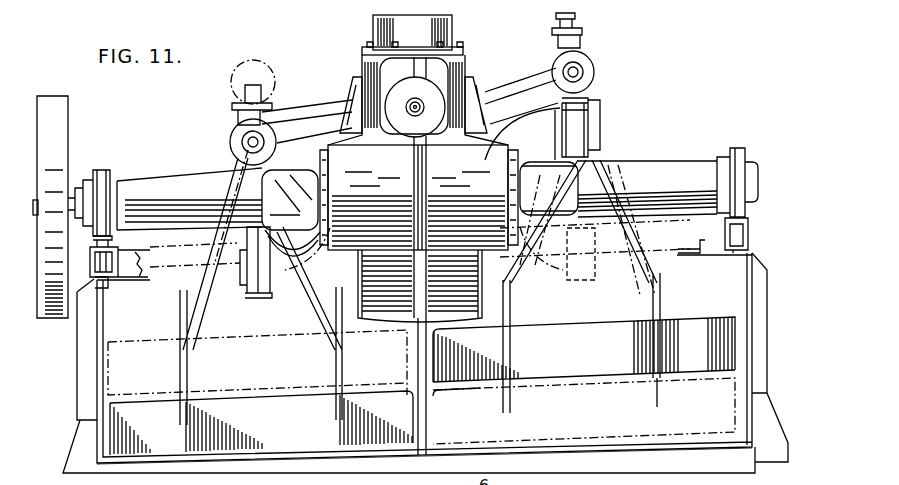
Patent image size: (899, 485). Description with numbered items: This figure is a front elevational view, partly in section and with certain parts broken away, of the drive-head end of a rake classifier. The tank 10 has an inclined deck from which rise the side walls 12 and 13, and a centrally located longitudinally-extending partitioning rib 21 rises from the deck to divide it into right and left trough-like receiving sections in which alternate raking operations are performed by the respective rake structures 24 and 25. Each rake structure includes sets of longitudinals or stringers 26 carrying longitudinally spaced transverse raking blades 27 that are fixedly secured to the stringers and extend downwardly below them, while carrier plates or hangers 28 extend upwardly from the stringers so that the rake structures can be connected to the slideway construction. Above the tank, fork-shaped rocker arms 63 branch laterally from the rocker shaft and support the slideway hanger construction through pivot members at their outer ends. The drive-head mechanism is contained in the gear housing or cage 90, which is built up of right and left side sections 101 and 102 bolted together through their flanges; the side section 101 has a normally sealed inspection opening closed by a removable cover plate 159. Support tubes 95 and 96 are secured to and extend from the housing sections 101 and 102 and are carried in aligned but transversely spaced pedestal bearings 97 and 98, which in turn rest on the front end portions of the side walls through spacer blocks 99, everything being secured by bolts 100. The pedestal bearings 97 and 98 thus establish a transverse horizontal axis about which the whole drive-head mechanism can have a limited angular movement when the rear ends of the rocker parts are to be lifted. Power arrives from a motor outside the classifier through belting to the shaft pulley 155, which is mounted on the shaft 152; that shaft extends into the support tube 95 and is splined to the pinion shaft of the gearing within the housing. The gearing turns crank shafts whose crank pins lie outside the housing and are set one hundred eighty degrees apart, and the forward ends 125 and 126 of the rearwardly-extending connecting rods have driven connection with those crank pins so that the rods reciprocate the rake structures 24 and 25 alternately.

The tank 10 is at (424, 378).
The side wall 12 is at (752, 307).
The side wall 13 is at (82, 387).
The partitioning rib 21 is at (430, 418).
The rake structure 24 is at (660, 302).
The rake structure 25 is at (166, 400).
The longitudinals or stringers 26 is at (506, 348).
The transverse raking blades 27 is at (261, 423).
The carrier plates or hangers 28 is at (322, 323).
The rocker arms 63 is at (296, 100).
The gear housing or cage 90 is at (360, 32).
The support tube 95 is at (172, 185).
The support tube 96 is at (651, 168).
The pedestal bearing 97 is at (99, 171).
The pedestal bearing 98 is at (730, 150).
The spacer blocks 99 is at (118, 264).
The bolts 100 is at (102, 288).
The housing side section 101 is at (368, 76).
The housing side section 102 is at (455, 66).
The forward end of connecting rod 125 is at (257, 298).
The forward end of connecting rod 126 is at (590, 100).
The shaft 152 is at (72, 200).
The shaft pulley 155 is at (68, 108).
The removable cover plate 159 is at (419, 233).